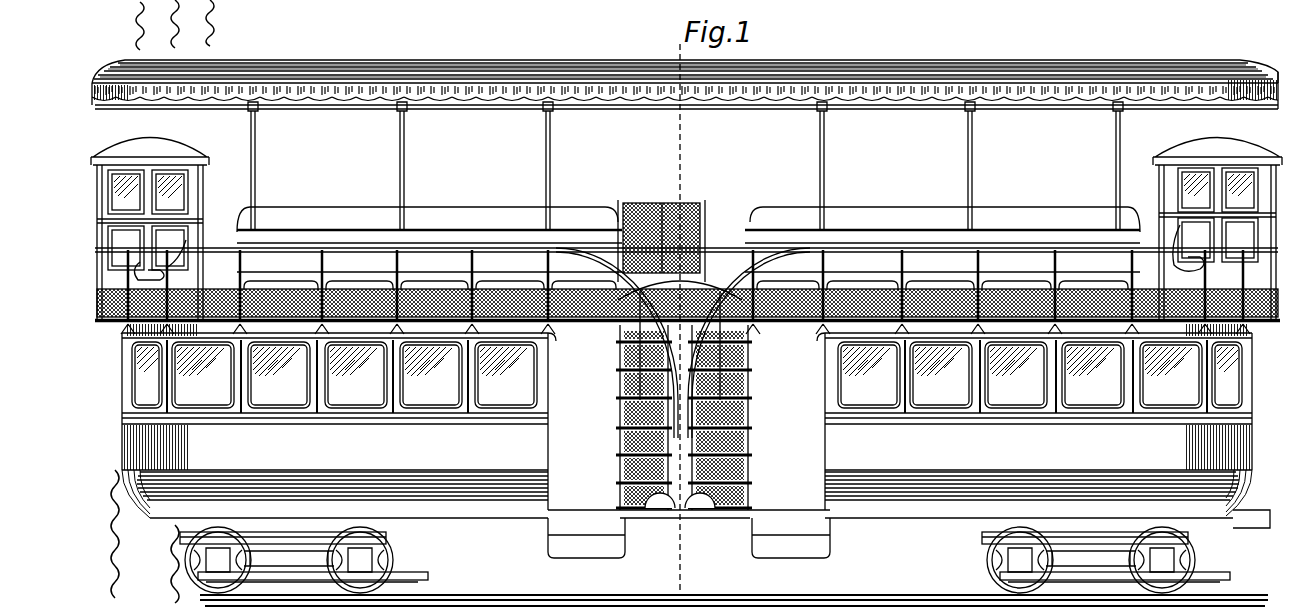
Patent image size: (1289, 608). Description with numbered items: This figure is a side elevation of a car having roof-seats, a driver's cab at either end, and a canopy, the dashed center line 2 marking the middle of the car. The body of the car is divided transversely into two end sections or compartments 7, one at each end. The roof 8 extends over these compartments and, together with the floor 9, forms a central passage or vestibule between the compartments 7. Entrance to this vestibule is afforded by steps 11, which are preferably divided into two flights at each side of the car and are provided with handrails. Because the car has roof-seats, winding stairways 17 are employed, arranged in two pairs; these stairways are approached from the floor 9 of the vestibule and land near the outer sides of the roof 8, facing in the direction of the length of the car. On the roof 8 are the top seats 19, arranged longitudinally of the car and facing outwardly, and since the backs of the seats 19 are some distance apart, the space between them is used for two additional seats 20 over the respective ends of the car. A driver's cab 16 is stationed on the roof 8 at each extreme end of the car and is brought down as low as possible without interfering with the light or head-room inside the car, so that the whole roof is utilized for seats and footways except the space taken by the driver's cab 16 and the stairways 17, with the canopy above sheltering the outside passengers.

The center line 2 is at (676, 311).
The end sections or compartments 7 is at (696, 430).
The roof 8 is at (687, 312).
The floor 9 is at (689, 445).
The steps 11 is at (764, 412).
The driver's cab 16 is at (686, 229).
The winding stairways 17 is at (706, 308).
The top seats 19 is at (782, 343).
The additional seats 20 is at (689, 241).